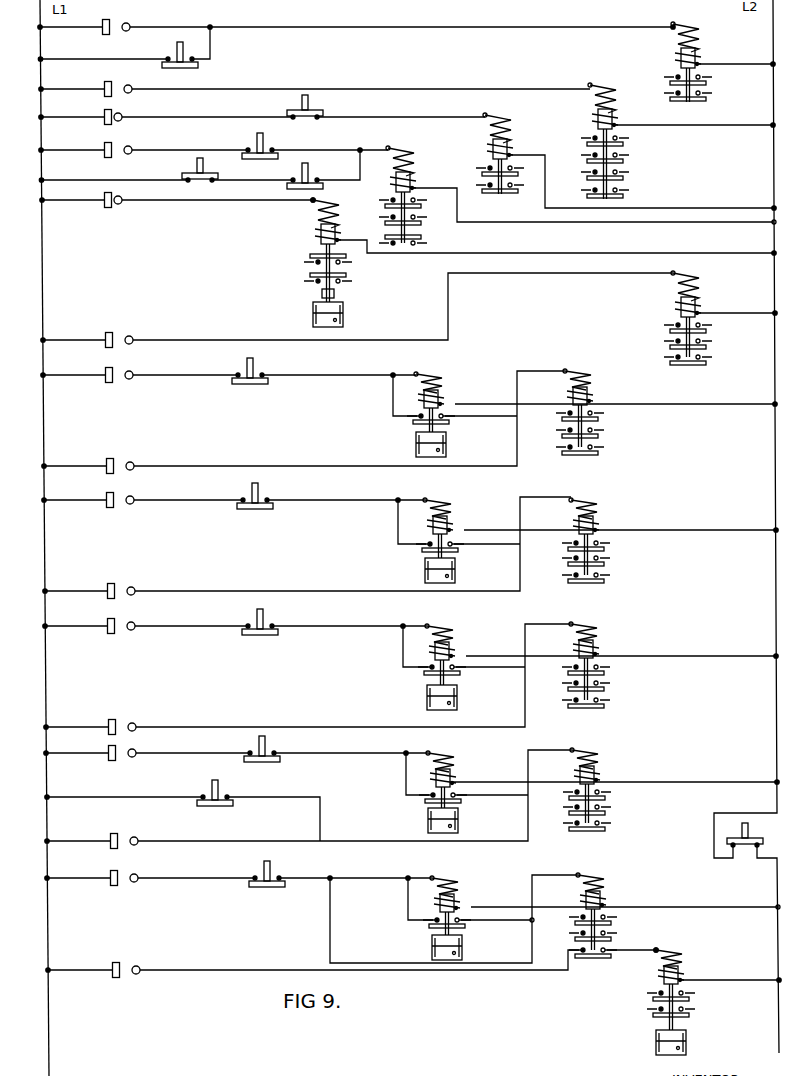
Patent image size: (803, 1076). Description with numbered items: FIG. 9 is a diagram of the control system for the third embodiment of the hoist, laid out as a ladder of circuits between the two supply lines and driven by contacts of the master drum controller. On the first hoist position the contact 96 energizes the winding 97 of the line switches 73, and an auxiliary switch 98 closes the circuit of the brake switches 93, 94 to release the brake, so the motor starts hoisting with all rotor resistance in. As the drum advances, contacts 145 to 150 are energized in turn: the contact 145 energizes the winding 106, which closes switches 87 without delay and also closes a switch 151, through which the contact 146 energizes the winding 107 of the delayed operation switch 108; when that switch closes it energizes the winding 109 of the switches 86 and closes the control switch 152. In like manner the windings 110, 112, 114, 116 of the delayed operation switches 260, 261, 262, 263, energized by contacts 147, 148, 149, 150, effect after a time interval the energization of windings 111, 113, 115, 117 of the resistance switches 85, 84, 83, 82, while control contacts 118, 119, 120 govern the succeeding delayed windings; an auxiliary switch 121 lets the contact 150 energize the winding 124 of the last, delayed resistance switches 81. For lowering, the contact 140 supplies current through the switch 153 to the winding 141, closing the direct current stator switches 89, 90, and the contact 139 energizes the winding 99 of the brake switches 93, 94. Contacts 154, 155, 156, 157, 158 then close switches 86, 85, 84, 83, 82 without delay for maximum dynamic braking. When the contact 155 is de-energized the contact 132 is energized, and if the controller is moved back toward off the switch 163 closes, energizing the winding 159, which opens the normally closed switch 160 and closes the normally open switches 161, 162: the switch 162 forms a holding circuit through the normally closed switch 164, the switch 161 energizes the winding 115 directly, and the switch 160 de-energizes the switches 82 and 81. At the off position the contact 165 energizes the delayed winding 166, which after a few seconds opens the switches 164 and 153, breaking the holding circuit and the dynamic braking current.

The contact 139 is at (129, 30).
The auxiliary switch 98 is at (201, 61).
The contact 96 is at (131, 92).
The contact 140 is at (121, 120).
The switch 163 is at (248, 145).
The contact 132 is at (131, 153).
The switch 164 is at (208, 183).
The contact 165 is at (121, 203).
The switch 153 is at (316, 119).
The switch 162 is at (309, 174).
The winding 159 is at (410, 161).
The winding 141 is at (498, 122).
The direct current stator energizing circuit switch 89 is at (509, 167).
The direct current stator energizing circuit switch 90 is at (513, 193).
The winding 99 is at (700, 44).
The winding 97 is at (600, 91).
The brake switch 93 is at (712, 85).
The brake switch 94 is at (714, 95).
The line switch 73 is at (628, 139).
The winding 166 is at (312, 220).
The switch 161 is at (416, 220).
The switch 160 is at (426, 243).
The contact 145 is at (132, 343).
The contact 146 is at (132, 378).
The switch 151 is at (256, 372).
The winding 107 is at (430, 376).
The delayed operation switch 108 is at (417, 424).
The winding 106 is at (700, 288).
The switch 87 is at (712, 325).
The winding 109 is at (587, 376).
The switch 86 is at (604, 414).
The control switch 152 is at (611, 451).
The contact 154 is at (133, 469).
The contact 147 is at (133, 503).
The winding 110 is at (440, 505).
The delayed operation switch 260 is at (425, 552).
The winding 111 is at (594, 504).
The resistance switch 85 is at (610, 545).
The control contact 118 is at (619, 575).
The contact 155 is at (134, 594).
The contact 148 is at (134, 629).
The winding 112 is at (441, 630).
The delayed operation switch 261 is at (425, 677).
The winding 113 is at (594, 628).
The resistance switch 84 is at (610, 668).
The control contact 119 is at (612, 701).
The contact 156 is at (135, 730).
The contact 149 is at (135, 756).
The winding 114 is at (444, 756).
The delayed operation switch 262 is at (428, 800).
The winding 115 is at (589, 754).
The resistance switch 83 is at (611, 793).
The control contact 120 is at (614, 823).
The contact 157 is at (137, 844).
The contact 150 is at (137, 881).
The winding 116 is at (448, 881).
The delayed operation switch 263 is at (432, 926).
The winding 117 is at (596, 878).
The resistance switch 82 is at (617, 918).
The auxiliary switch 121 is at (610, 962).
The winding 124 is at (675, 966).
The resistance switch 81 is at (695, 994).
The contact 158 is at (139, 973).